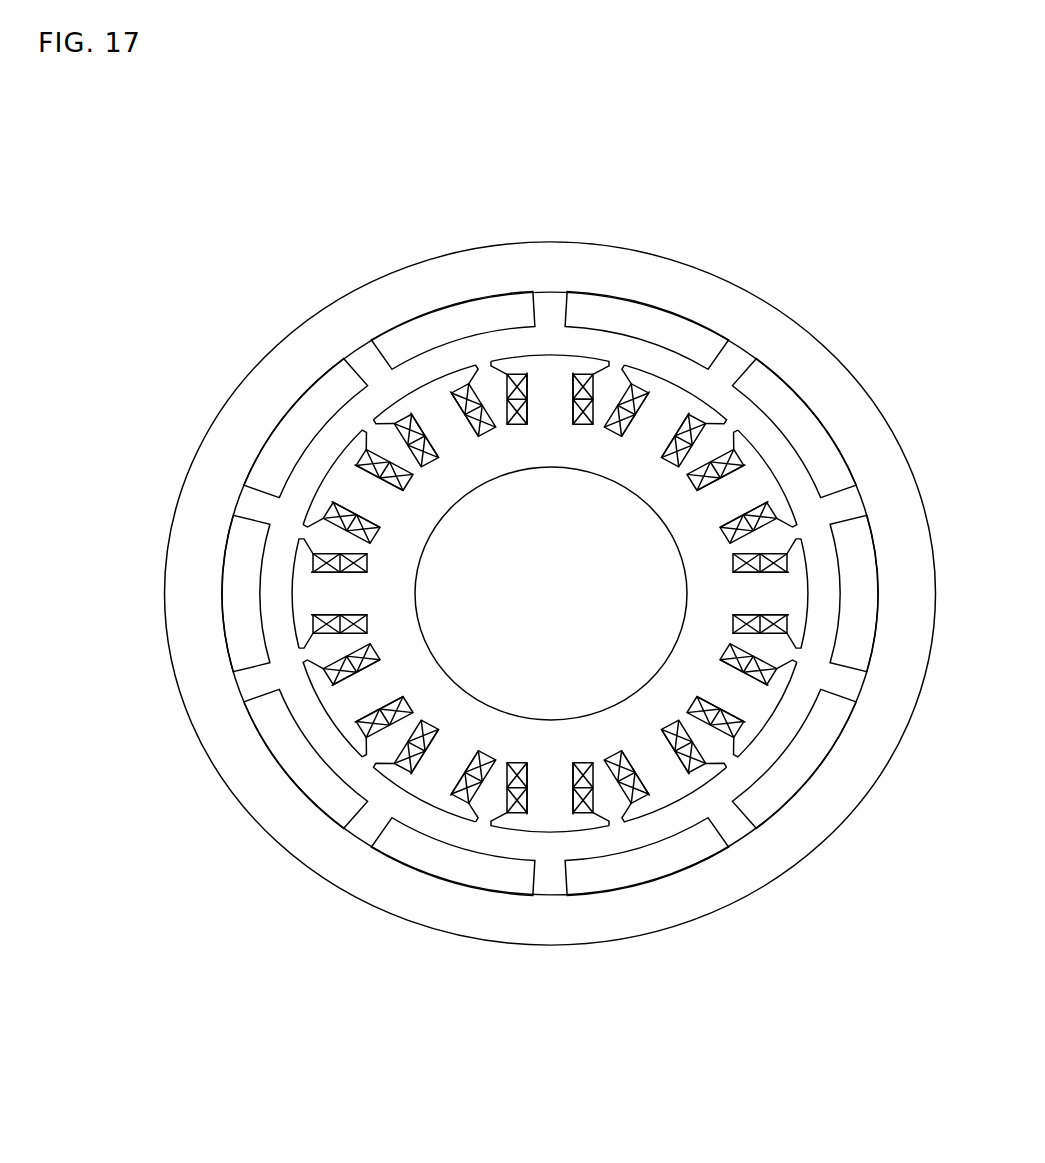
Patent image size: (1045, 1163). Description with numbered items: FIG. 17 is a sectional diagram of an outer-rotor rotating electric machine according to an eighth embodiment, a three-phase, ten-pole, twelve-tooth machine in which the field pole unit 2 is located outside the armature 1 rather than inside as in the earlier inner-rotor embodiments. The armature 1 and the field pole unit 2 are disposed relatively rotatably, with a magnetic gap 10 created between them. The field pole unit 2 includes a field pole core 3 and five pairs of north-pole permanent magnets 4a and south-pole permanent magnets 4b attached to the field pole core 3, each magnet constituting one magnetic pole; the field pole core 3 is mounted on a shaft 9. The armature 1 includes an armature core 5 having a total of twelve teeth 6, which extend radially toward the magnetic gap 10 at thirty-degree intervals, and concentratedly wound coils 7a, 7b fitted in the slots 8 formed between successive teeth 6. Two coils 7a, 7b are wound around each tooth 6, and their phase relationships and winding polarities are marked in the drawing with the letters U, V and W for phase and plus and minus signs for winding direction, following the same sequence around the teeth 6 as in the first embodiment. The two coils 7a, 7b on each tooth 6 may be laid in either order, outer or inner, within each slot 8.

The armature 1 is at (550, 474).
The field pole unit 2 is at (546, 583).
The field pole core 3 is at (720, 307).
The north-pole permanent magnet 4a is at (783, 393).
The south-pole permanent magnet 4b is at (879, 512).
The armature core 5 is at (475, 458).
The tooth 6 is at (563, 377).
The coil 7a is at (587, 400).
The coil 7b is at (577, 410).
The slot 8 is at (360, 371).
The shaft 9 is at (440, 605).
The magnetic gap 10 is at (336, 429).